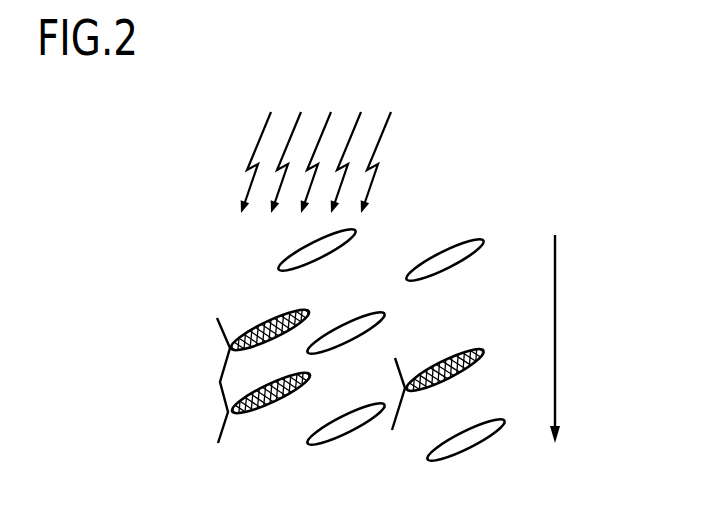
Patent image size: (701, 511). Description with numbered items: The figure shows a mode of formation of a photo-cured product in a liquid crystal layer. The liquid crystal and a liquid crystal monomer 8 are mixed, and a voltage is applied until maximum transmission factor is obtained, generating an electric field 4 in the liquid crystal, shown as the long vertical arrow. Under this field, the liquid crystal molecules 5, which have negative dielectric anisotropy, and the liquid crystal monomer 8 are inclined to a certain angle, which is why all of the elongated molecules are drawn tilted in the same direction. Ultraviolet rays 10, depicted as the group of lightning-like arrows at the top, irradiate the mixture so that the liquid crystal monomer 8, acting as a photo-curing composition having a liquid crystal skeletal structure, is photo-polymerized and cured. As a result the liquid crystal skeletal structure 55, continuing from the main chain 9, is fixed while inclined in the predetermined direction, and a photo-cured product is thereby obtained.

The ultraviolet rays 10 is at (255, 153).
The liquid crystal molecules 5 is at (484, 240).
The liquid crystal skeletal structure 55 is at (256, 334).
The main chain 9 is at (220, 378).
The liquid crystal monomer 8 is at (485, 350).
The electric field 4 is at (556, 343).